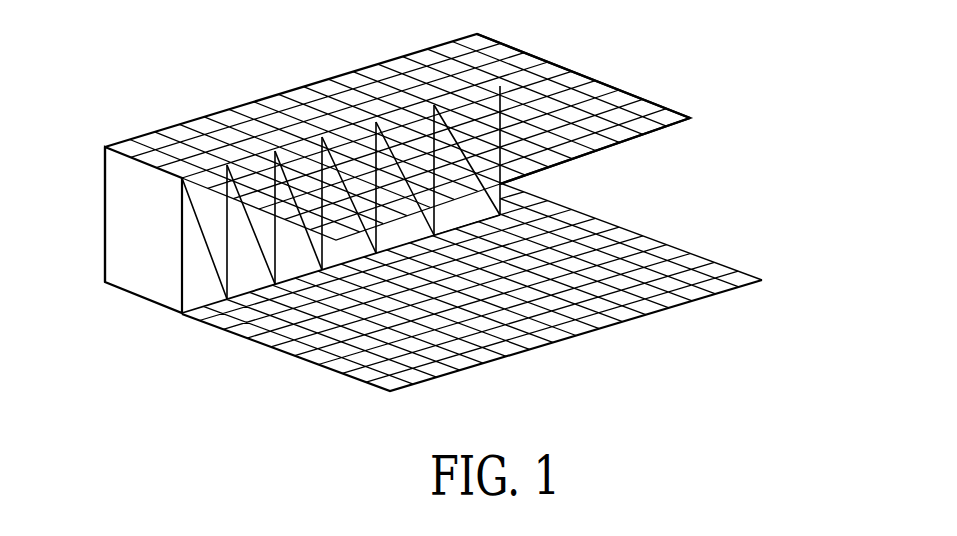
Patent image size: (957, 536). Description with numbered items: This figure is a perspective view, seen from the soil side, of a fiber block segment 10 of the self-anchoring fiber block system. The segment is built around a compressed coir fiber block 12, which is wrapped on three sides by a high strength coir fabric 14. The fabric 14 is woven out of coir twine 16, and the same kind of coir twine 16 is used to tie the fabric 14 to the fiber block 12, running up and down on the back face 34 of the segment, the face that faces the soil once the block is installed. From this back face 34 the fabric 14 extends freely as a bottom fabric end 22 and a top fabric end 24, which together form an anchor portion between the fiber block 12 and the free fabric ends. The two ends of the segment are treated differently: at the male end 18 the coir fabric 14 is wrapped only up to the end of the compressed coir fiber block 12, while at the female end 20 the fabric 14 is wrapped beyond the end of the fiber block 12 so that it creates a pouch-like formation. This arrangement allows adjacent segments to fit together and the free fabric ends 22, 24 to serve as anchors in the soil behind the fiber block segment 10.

The fiber block segment 10 is at (195, 86).
The compressed coir fiber block 12 is at (132, 242).
The high strength coir fabric 14 is at (538, 87).
The coir twine 16 is at (257, 258).
The male end 18 is at (82, 235).
The female end 20 is at (608, 168).
The bottom fabric end 22 is at (636, 321).
The top fabric end 24 is at (648, 124).
The back face 34 is at (306, 271).